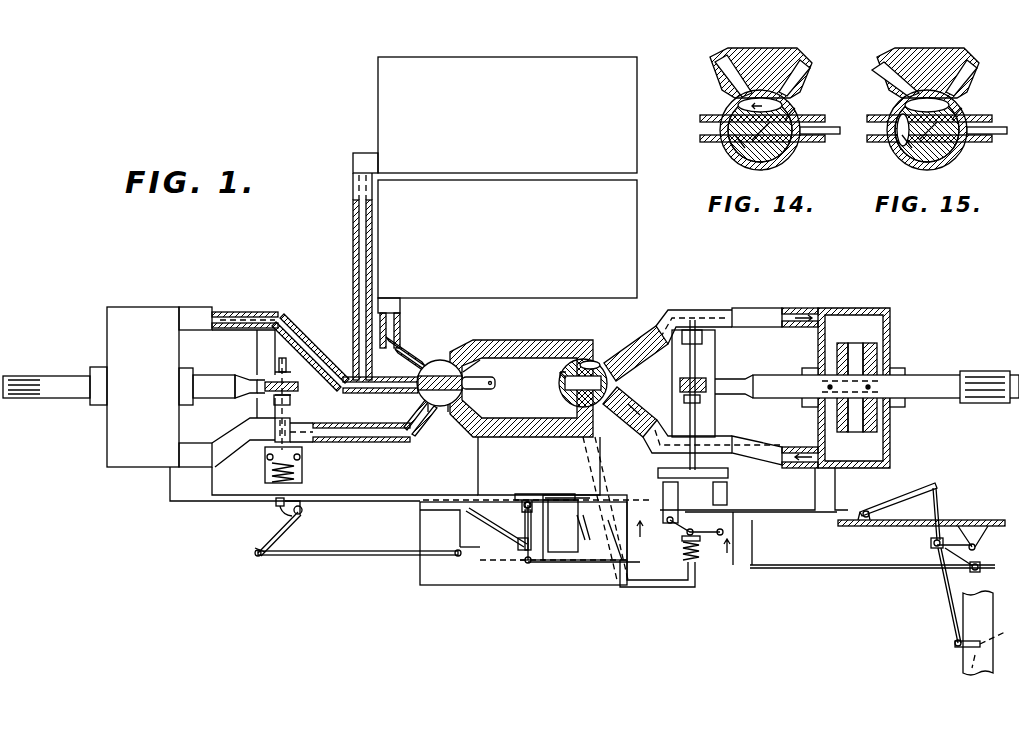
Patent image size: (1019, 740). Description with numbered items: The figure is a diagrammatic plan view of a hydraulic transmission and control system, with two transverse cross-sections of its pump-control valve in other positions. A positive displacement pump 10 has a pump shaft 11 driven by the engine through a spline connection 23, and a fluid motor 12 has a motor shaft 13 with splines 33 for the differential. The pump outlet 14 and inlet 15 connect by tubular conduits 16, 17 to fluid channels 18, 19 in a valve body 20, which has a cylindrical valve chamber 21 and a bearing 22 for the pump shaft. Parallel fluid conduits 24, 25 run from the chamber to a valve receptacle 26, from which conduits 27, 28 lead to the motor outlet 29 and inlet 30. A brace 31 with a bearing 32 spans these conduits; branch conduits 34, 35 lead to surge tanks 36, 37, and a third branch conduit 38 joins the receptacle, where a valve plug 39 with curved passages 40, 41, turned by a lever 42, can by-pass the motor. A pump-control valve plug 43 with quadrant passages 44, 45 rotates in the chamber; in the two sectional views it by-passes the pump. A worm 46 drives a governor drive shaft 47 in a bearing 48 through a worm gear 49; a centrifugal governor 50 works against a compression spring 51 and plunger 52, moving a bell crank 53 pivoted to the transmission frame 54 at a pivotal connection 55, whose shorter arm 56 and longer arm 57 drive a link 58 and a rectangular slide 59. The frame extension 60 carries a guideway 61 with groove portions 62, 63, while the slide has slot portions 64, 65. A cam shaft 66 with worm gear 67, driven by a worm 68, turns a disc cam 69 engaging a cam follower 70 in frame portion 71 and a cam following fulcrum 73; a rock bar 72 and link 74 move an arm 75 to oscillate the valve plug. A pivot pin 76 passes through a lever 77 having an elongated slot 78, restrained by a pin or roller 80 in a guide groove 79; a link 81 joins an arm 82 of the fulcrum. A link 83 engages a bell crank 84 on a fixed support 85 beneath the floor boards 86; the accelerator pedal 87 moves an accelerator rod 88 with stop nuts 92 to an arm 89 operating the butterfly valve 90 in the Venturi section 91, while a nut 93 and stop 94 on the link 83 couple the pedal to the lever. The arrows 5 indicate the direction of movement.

In FIG. 1, the direction arrow 5 is at (688, 537).
In FIG. 1, the positive displacement pump 10 is at (868, 308).
In FIG. 1, the pump shaft 11 is at (920, 375).
In FIG. 1, the fluid motor 12 is at (150, 307).
In FIG. 1, the motor shaft 13 is at (66, 367).
In FIG. 1, the outlet 14 is at (800, 447).
In FIG. 1, the inlet 15 is at (808, 308).
In FIG. 1, the tubular conduit 16 is at (760, 445).
In FIG. 1, the tubular conduit 17 is at (760, 308).
In FIG. 1, the fluid channel 18 is at (637, 432).
In FIG. 14, the fluid channel 18 is at (800, 78).
In FIG. 15, the fluid channel 18 is at (968, 78).
In FIG. 1, the fluid channel 19 is at (640, 348).
In FIG. 14, the fluid channel 19 is at (722, 75).
In FIG. 15, the fluid channel 19 is at (887, 82).
In FIG. 1, the valve body 20 is at (690, 308).
In FIG. 14, the valve body 20 is at (766, 48).
In FIG. 15, the valve body 20 is at (933, 48).
In FIG. 1, the valve chamber 21 is at (560, 385).
In FIG. 14, the valve chamber 21 is at (745, 165).
In FIG. 15, the valve chamber 21 is at (927, 130).
In FIG. 1, the bearing 22 is at (735, 357).
In FIG. 1, the spline connection 23 is at (975, 403).
In FIG. 1, the fluid conduit 24 is at (535, 440).
In FIG. 14, the fluid conduit 24 is at (820, 140).
In FIG. 15, the fluid conduit 24 is at (985, 140).
In FIG. 1, the fluid conduit 25 is at (538, 340).
In FIG. 14, the fluid conduit 25 is at (702, 142).
In FIG. 15, the fluid conduit 25 is at (870, 142).
In FIG. 1, the valve receptacle 26 is at (445, 360).
In FIG. 1, the fluid conduit 27 is at (332, 423).
In FIG. 1, the fluid conduit 28 is at (325, 340).
In FIG. 1, the outlet 29 is at (196, 447).
In FIG. 1, the inlet 30 is at (200, 307).
In FIG. 1, the brace 31 is at (257, 340).
In FIG. 1, the bearing 32 is at (250, 372).
In FIG. 1, the splines 33 is at (33, 370).
In FIG. 1, the branch conduit 34 is at (400, 318).
In FIG. 1, the branch conduit 35 is at (353, 250).
In FIG. 1, the surge tank 36 is at (637, 245).
In FIG. 1, the surge tank 37 is at (378, 100).
In FIG. 1, the third branch conduit 38 is at (408, 345).
In FIG. 1, the valve plug 39 is at (430, 405).
In FIG. 1, the curved passage 40 is at (448, 406).
In FIG. 1, the curved passage 41 is at (462, 362).
In FIG. 1, the lever 42 is at (495, 378).
In FIG. 1, the pump-control valve plug 43 is at (565, 390).
In FIG. 14, the pump-control valve plug 43 is at (745, 146).
In FIG. 15, the pump-control valve plug 43 is at (922, 160).
In FIG. 1, the quadrant passage 44 is at (622, 416).
In FIG. 14, the quadrant passage 44 is at (798, 110).
In FIG. 15, the quadrant passage 44 is at (964, 106).
In FIG. 1, the quadrant passage 45 is at (598, 362).
In FIG. 14, the quadrant passage 45 is at (738, 104).
In FIG. 15, the quadrant passage 45 is at (900, 145).
In FIG. 1, the worm 46 is at (295, 365).
In FIG. 1, the governor drive shaft 47 is at (274, 400).
In FIG. 1, the bearing 48 is at (275, 430).
In FIG. 1, the worm gear 49 is at (298, 387).
In FIG. 1, the centrifugal governor 50 is at (300, 460).
In FIG. 1, the compression spring 51 is at (300, 474).
In FIG. 1, the plunger 52 is at (276, 504).
In FIG. 1, the bell crank 53 is at (258, 550).
In FIG. 1, the transmission frame 54 is at (392, 495).
In FIG. 1, the pivotal connection 55 is at (304, 512).
In FIG. 1, the shorter arm 56 is at (284, 514).
In FIG. 1, the longer arm 57 is at (283, 533).
In FIG. 1, the link 58 is at (368, 551).
In FIG. 1, the rectangular slide 59 is at (460, 525).
In FIG. 1, the extension 60 is at (475, 585).
In FIG. 1, the guideway 61 is at (445, 510).
In FIG. 1, the transverse portion 62 is at (580, 540).
In FIG. 1, the diagonal portion 63 is at (563, 526).
In FIG. 1, the transverse portion 64 is at (518, 545).
In FIG. 1, the diagonal portion 65 is at (495, 530).
In FIG. 1, the cam shaft 66 is at (695, 422).
In FIG. 1, the worm gear 67 is at (706, 385).
In FIG. 1, the worm 68 is at (700, 399).
In FIG. 1, the disc cam 69 is at (658, 472).
In FIG. 1, the cam follower 70 is at (727, 492).
In FIG. 1, the portion 71 is at (735, 520).
In FIG. 1, the rock bar 72 is at (740, 560).
In FIG. 1, the cam following fulcrum 73 is at (663, 492).
In FIG. 1, the link 74 is at (665, 587).
In FIG. 1, the arm 75 is at (551, 370).
In FIG. 1, the pivot pin 76 is at (518, 494).
In FIG. 1, the lever 77 is at (522, 565).
In FIG. 1, the elongated slot 78 is at (528, 562).
In FIG. 1, the guide groove 79 is at (575, 496).
In FIG. 1, the pin or roller 80 is at (540, 484).
In FIG. 1, the link 81 is at (623, 525).
In FIG. 1, the arm 82 is at (620, 512).
In FIG. 1, the link 83 is at (803, 568).
In FIG. 1, the bell crank 84 is at (945, 565).
In FIG. 1, the fixed support 85 is at (976, 547).
In FIG. 1, the floor boards 86 is at (894, 526).
In FIG. 1, the accelerator pedal 87 is at (892, 500).
In FIG. 1, the accelerator rod 88 is at (932, 510).
In FIG. 1, the arm 89 is at (958, 647).
In FIG. 1, the butterfly valve 90 is at (968, 670).
In FIG. 1, the Venturi section 91 is at (952, 614).
In FIG. 1, the stop nuts 92 is at (930, 543).
In FIG. 1, the nut 93 is at (975, 570).
In FIG. 1, the stop 94 is at (530, 565).